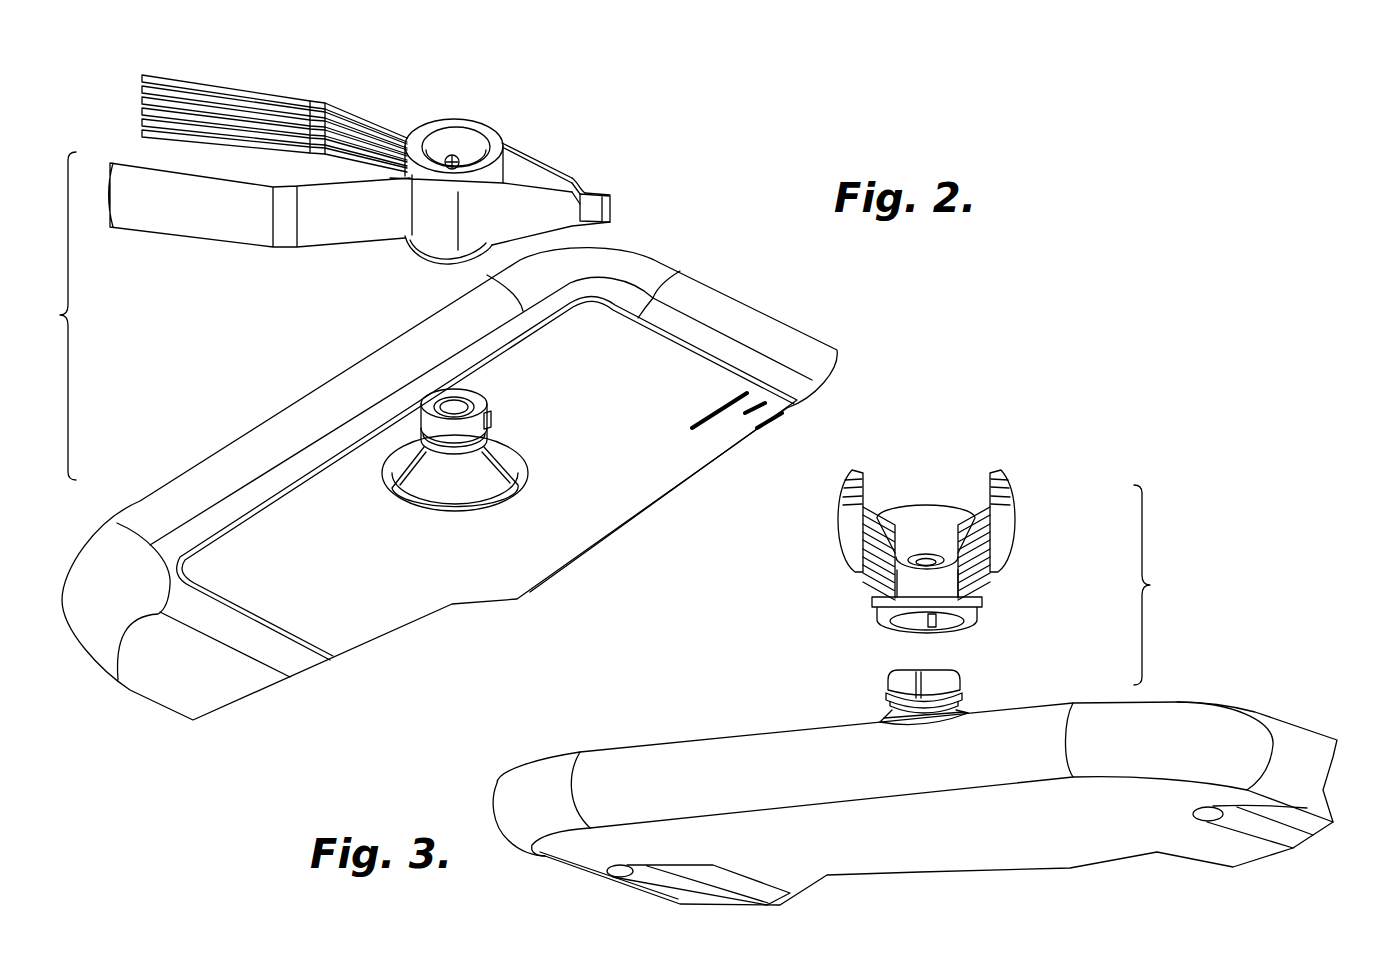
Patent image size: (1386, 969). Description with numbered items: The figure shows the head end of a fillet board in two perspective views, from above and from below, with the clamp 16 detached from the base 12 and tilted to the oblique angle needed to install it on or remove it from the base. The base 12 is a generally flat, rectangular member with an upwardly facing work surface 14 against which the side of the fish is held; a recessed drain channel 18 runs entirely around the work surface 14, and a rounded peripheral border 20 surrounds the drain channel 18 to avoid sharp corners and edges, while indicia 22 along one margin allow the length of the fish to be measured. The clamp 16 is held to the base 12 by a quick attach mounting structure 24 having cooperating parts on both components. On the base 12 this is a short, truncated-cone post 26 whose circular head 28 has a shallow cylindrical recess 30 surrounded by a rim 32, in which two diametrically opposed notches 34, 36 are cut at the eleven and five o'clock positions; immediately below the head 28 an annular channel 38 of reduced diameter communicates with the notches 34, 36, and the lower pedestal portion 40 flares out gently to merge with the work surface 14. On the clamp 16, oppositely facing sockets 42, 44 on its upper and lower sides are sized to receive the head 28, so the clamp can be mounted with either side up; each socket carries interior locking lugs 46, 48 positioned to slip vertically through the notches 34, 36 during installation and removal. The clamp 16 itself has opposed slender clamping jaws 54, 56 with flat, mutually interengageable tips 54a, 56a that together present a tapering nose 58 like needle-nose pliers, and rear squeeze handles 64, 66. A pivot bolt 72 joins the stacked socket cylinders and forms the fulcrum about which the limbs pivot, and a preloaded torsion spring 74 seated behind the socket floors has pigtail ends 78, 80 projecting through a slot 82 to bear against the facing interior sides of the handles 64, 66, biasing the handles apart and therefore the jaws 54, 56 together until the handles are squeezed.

In FIG. 2, the base 12 is at (807, 319).
In FIG. 3, the base 12 is at (1223, 692).
In FIG. 2, the work surface 14 is at (470, 561).
In FIG. 2, the clamp 16 is at (507, 121).
In FIG. 3, the clamp 16 is at (969, 498).
In FIG. 2, the drain channel 18 is at (288, 663).
In FIG. 2, the peripheral border 20 is at (100, 640).
In FIG. 3, the peripheral border 20 is at (545, 768).
In FIG. 2, the indicia 22 is at (713, 417).
In FIG. 2, the quick attach mounting structure 24 is at (534, 450).
In FIG. 3, the quick attach mounting structure 24 is at (868, 670).
In FIG. 2, the post 26 is at (417, 466).
In FIG. 3, the post 26 is at (925, 720).
In FIG. 2, the head 28 is at (486, 402).
In FIG. 3, the head 28 is at (962, 695).
In FIG. 2, the recess 30 is at (456, 403).
In FIG. 2, the rim 32 is at (462, 437).
In FIG. 3, the rim 32 is at (950, 677).
In FIG. 3, the notch 34 is at (900, 681).
In FIG. 2, the notch 36 is at (488, 417).
In FIG. 3, the annular channel 38 is at (945, 702).
In FIG. 2, the pedestal portion 40 is at (484, 468).
In FIG. 3, the pedestal portion 40 is at (890, 706).
In FIG. 2, the socket 42 is at (467, 115).
In FIG. 3, the socket 42 is at (890, 498).
In FIG. 2, the socket 44 is at (428, 265).
In FIG. 3, the socket 44 is at (975, 631).
In FIG. 2, the locking lug 46 is at (493, 135).
In FIG. 3, the locking lug 46 is at (925, 630).
In FIG. 2, the locking lug 48 is at (423, 140).
In FIG. 2, the clamping jaw 54 is at (562, 163).
In FIG. 2, the tip 54a is at (611, 194).
In FIG. 2, the clamping jaw 56 is at (537, 223).
In FIG. 2, the tip 56a is at (601, 218).
In FIG. 2, the tapering nose 58 is at (590, 175).
In FIG. 2, the squeeze handle 64 is at (166, 97).
In FIG. 3, the squeeze handle 64 is at (840, 537).
In FIG. 2, the squeeze handle 66 is at (217, 230).
In FIG. 3, the squeeze handle 66 is at (1025, 521).
In FIG. 2, the pivot bolt 72 is at (452, 157).
In FIG. 3, the torsion spring 74 is at (932, 560).
In FIG. 3, the pigtail end 78 is at (900, 557).
In FIG. 3, the pigtail end 80 is at (962, 568).
In FIG. 3, the slot 82 is at (917, 555).